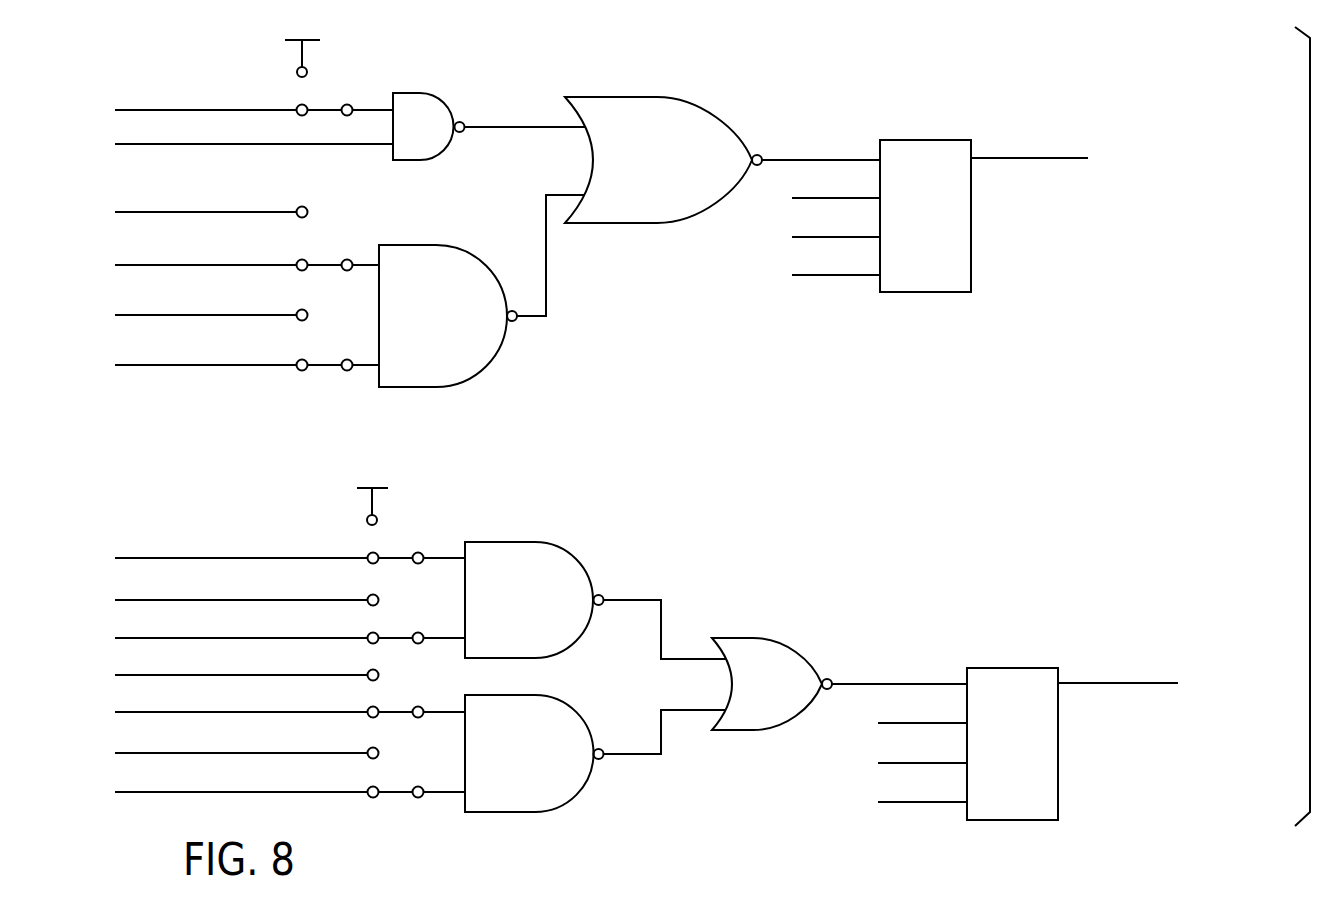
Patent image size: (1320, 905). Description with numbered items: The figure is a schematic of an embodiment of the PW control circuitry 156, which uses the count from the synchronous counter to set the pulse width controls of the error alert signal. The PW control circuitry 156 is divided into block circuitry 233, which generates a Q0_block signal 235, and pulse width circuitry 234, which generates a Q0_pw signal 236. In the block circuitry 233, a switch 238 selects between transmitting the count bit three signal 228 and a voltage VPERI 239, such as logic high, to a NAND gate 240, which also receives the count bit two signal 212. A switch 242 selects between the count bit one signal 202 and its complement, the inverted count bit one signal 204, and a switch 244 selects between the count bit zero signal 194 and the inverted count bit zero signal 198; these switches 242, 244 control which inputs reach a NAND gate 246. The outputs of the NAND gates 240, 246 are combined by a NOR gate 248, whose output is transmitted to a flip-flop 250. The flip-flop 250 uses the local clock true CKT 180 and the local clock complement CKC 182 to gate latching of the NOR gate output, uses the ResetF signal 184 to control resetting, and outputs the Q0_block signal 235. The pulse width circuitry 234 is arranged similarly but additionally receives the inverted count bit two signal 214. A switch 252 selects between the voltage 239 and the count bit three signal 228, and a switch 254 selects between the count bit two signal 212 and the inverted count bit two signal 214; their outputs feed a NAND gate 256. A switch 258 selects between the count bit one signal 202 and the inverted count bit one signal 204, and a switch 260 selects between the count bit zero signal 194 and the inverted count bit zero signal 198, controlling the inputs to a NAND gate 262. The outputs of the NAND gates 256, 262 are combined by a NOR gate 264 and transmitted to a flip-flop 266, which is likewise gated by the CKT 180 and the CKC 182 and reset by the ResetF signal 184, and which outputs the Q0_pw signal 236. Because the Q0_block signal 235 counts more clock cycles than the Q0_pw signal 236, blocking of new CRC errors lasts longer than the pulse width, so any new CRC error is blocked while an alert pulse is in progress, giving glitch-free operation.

The PW control circuitry 156 is at (693, 833).
The local clock true (CKT) 180 is at (808, 199).
The local clock complement (CKC) 182 is at (808, 238).
The ResetF signal 184 is at (808, 276).
The Count 0 194 is at (119, 314).
The CountF 0 198 is at (119, 364).
The Count 1 202 is at (119, 211).
The CountF 1 204 is at (119, 264).
The Count 2 212 is at (119, 143).
The CountF 2 214 is at (119, 637).
The Count 3 228 is at (119, 109).
The block circuitry 233 is at (1088, 252).
The pulse width circuitry 234 is at (1168, 780).
The Q0_block signal 235 is at (1058, 160).
The Q0_pw signal 236 is at (1140, 684).
The switch 238 is at (322, 84).
The voltage (VPERI) 239 is at (268, 24).
The NAND gate 240 is at (442, 98).
The switch 242 is at (330, 238).
The switch 244 is at (317, 340).
The NAND gate 246 is at (457, 245).
The NOR gate 248 is at (690, 99).
The flip-flop 250 is at (922, 293).
The switch 252 is at (406, 524).
The switch 254 is at (397, 620).
The NAND gate 256 is at (567, 547).
The switch 258 is at (397, 695).
The switch 260 is at (397, 775).
The NAND gate 262 is at (565, 700).
The NOR gate 264 is at (790, 646).
The flip-flop 266 is at (1006, 821).